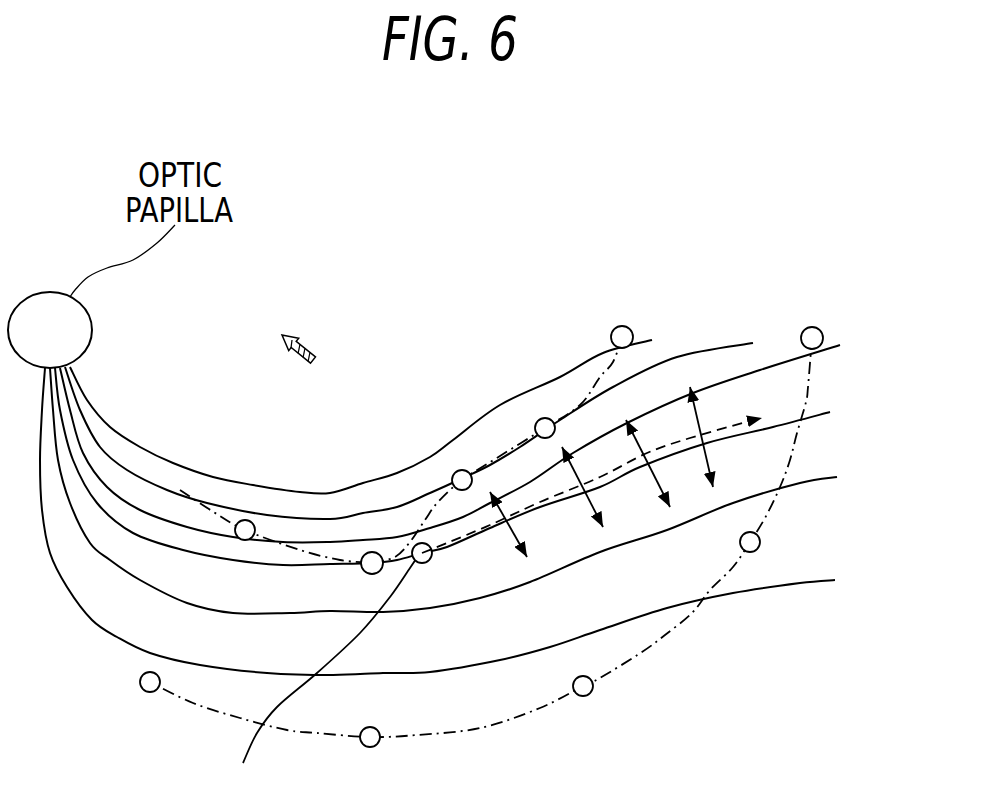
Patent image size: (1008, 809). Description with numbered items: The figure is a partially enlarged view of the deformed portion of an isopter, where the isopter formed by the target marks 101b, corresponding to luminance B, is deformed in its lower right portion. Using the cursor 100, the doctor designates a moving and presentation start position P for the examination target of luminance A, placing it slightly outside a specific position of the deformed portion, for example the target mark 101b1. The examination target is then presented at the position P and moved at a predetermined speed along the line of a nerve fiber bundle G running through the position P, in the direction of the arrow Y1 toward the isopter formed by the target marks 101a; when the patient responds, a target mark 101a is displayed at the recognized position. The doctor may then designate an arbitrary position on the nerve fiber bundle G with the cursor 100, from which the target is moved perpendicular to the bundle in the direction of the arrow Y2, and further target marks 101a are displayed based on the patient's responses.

The cursor 100 is at (335, 325).
The target mark 101a is at (812, 327).
The target mark 101b is at (618, 327).
The target mark 101b1 is at (370, 552).
The nerve fiber bundle G is at (820, 415).
The moving and presentation start position P is at (332, 671).
The arrow Y1 is at (596, 469).
The arrow Y2 is at (601, 475).